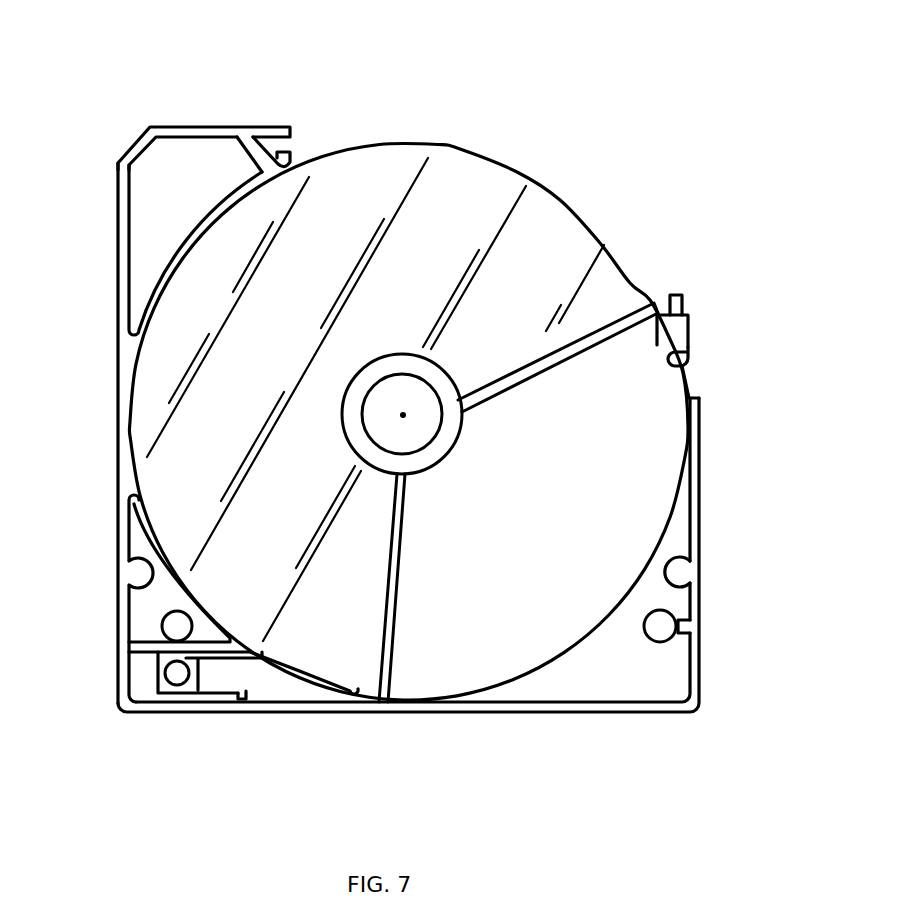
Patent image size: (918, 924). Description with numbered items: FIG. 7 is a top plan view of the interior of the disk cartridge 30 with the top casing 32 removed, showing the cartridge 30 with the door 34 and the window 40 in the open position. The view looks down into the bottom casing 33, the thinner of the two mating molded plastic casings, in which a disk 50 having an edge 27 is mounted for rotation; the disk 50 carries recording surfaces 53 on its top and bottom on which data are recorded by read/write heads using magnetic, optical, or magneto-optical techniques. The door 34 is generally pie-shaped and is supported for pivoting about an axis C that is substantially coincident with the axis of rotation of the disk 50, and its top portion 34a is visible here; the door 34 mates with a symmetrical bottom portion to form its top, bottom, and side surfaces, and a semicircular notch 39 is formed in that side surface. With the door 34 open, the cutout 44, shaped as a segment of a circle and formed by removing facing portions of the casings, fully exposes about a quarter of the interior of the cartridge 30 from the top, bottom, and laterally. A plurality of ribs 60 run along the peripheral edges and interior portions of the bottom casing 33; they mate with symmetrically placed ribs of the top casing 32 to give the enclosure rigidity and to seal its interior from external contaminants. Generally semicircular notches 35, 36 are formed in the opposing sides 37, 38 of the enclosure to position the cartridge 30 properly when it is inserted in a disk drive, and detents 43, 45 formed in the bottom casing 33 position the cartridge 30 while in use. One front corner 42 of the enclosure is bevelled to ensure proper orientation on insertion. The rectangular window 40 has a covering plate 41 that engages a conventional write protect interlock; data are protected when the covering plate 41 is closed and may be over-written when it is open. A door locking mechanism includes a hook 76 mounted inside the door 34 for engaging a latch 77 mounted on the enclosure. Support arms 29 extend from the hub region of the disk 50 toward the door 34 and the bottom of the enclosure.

The disk cartridge 30 is at (570, 76).
The disk 50 is at (512, 166).
The recording surfaces 53 is at (585, 246).
The edge 27 is at (410, 132).
The axis C is at (418, 428).
The support arms 29 is at (566, 368).
The front corner 42 is at (130, 148).
The latch 77 is at (292, 152).
The bottom casing 33 is at (117, 224).
The ribs 60 is at (130, 244).
The side 38 is at (118, 632).
The notch 36 is at (127, 574).
The detent 43 is at (190, 632).
The cutout 44 is at (172, 686).
The rectangular window 40 is at (166, 702).
The covering plate 41 is at (236, 701).
The top casing 32 is at (643, 714).
The top portion 34a is at (470, 694).
The side 37 is at (699, 620).
The notch 35 is at (690, 575).
The detent 45 is at (674, 634).
The door 34 is at (690, 328).
The hook 76 is at (682, 296).
The semicircular notch 39 is at (690, 357).